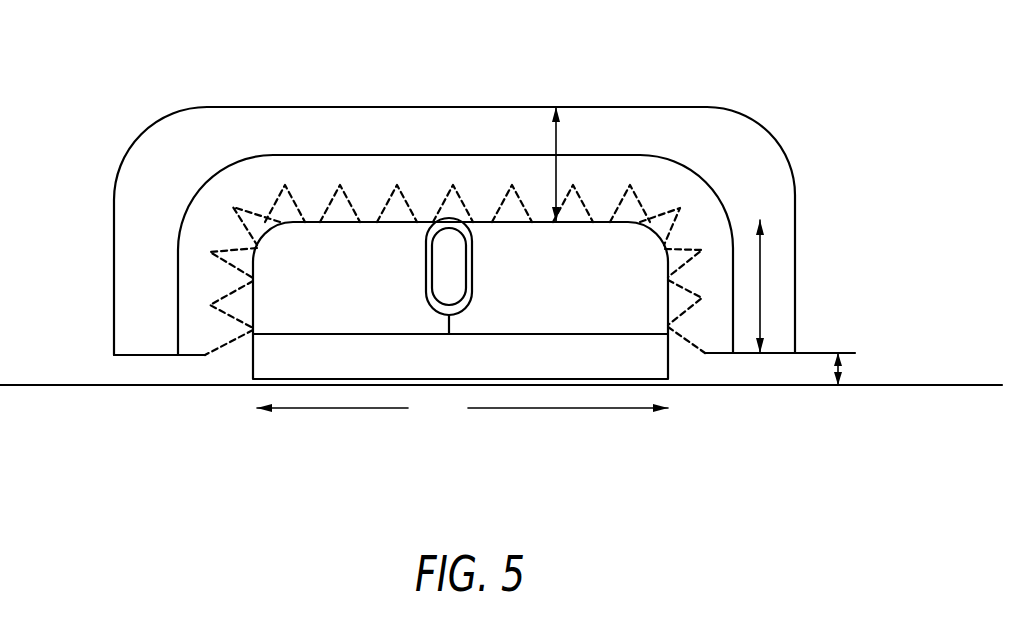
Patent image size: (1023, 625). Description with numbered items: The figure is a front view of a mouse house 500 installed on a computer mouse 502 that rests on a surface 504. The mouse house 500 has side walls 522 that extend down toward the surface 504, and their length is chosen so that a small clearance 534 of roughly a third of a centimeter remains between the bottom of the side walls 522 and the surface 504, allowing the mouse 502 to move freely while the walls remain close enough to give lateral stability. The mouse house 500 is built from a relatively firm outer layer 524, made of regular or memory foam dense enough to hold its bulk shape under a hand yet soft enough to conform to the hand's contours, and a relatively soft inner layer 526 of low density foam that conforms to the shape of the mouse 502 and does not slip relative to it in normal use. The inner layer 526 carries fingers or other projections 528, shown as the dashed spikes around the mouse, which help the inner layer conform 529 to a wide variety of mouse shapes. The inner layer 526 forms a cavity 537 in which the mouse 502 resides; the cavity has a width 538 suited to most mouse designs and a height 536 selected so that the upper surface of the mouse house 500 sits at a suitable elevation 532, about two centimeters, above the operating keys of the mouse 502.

The mouse house 500 is at (458, 204).
The computer mouse 502 is at (466, 373).
The surface 504 is at (961, 385).
The side walls 522 is at (795, 213).
The outer layer 524 is at (161, 252).
The inner layer 526 is at (208, 272).
The projections 528 is at (265, 203).
The conform 529 is at (368, 213).
The elevation 532 is at (576, 164).
The clearance 534 is at (862, 369).
The height 536 is at (758, 286).
The cavity 537 is at (236, 362).
The width 538 is at (462, 409).